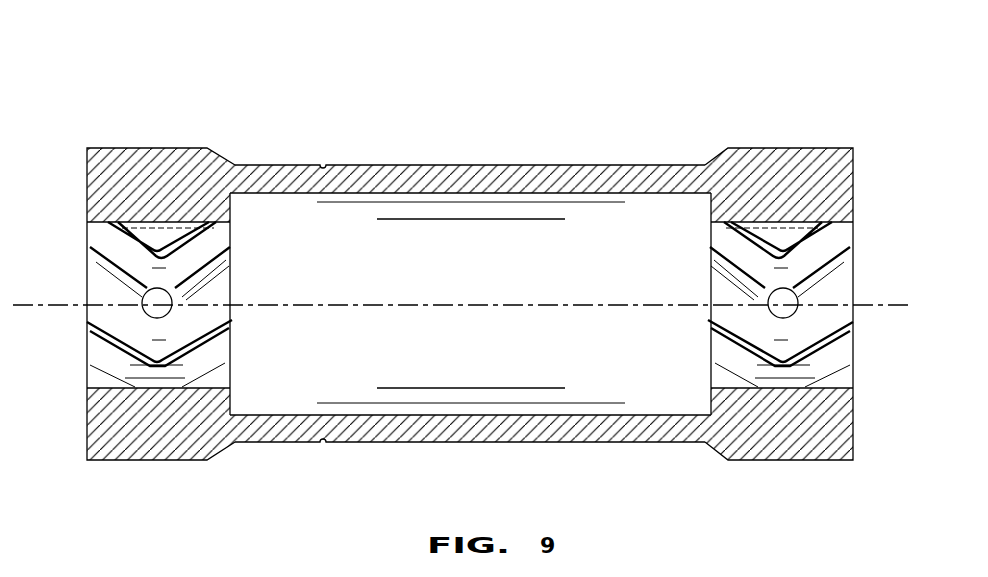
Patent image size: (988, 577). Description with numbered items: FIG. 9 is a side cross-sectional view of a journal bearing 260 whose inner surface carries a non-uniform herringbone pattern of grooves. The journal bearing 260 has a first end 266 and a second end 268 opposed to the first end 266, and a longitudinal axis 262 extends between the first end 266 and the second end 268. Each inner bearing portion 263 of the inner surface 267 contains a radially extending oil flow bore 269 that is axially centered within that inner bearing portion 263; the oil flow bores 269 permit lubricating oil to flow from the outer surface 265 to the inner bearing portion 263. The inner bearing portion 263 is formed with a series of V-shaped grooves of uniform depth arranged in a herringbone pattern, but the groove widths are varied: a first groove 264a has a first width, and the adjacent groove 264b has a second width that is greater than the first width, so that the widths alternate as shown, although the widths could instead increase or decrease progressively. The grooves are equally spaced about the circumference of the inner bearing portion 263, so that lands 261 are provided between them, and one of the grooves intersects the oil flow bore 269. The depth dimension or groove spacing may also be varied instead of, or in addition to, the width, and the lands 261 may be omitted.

The journal bearing 260 is at (345, 123).
The lands 261 is at (100, 257).
The longitudinal axis 262 is at (512, 304).
The inner bearing portion 263 is at (108, 226).
The first groove 264a is at (222, 224).
The adjacent groove 264b is at (226, 268).
The outer surface 265 is at (453, 164).
The first end 266 is at (105, 160).
The inner surface 267 is at (462, 193).
The second end 268 is at (835, 160).
The oil flow bore 269 is at (143, 295).